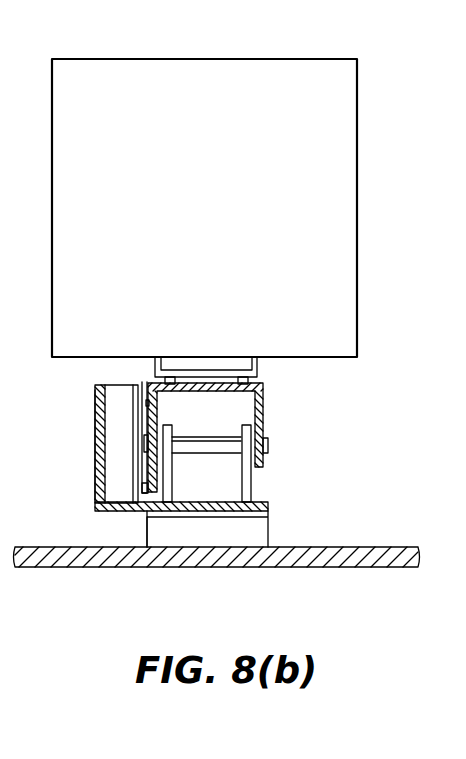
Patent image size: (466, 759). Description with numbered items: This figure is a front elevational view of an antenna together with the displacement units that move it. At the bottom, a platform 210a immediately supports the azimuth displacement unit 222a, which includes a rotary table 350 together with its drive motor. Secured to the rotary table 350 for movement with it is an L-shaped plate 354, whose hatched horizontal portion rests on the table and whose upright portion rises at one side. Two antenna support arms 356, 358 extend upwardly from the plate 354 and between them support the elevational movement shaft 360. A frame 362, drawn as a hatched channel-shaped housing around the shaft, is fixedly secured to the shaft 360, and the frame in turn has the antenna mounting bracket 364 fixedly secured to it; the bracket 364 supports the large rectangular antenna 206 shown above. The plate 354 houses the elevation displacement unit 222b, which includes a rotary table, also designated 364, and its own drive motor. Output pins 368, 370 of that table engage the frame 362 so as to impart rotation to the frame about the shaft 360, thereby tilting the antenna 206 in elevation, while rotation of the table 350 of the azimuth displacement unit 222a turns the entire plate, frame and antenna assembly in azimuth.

The antenna 206 is at (122, 56).
The antenna mounting bracket 364 is at (264, 369).
The output pin 368 is at (144, 398).
The output pin 370 is at (141, 487).
The elevation displacement unit 222b is at (92, 457).
The frame 362 is at (263, 420).
The elevational movement shaft 360 is at (203, 442).
The antenna support arm 356 is at (176, 479).
The antenna support arm 358 is at (254, 484).
The L-shaped plate 354 is at (85, 497).
The rotary table 350 is at (270, 516).
The azimuth displacement unit 222a is at (145, 528).
The platform 210a is at (387, 554).